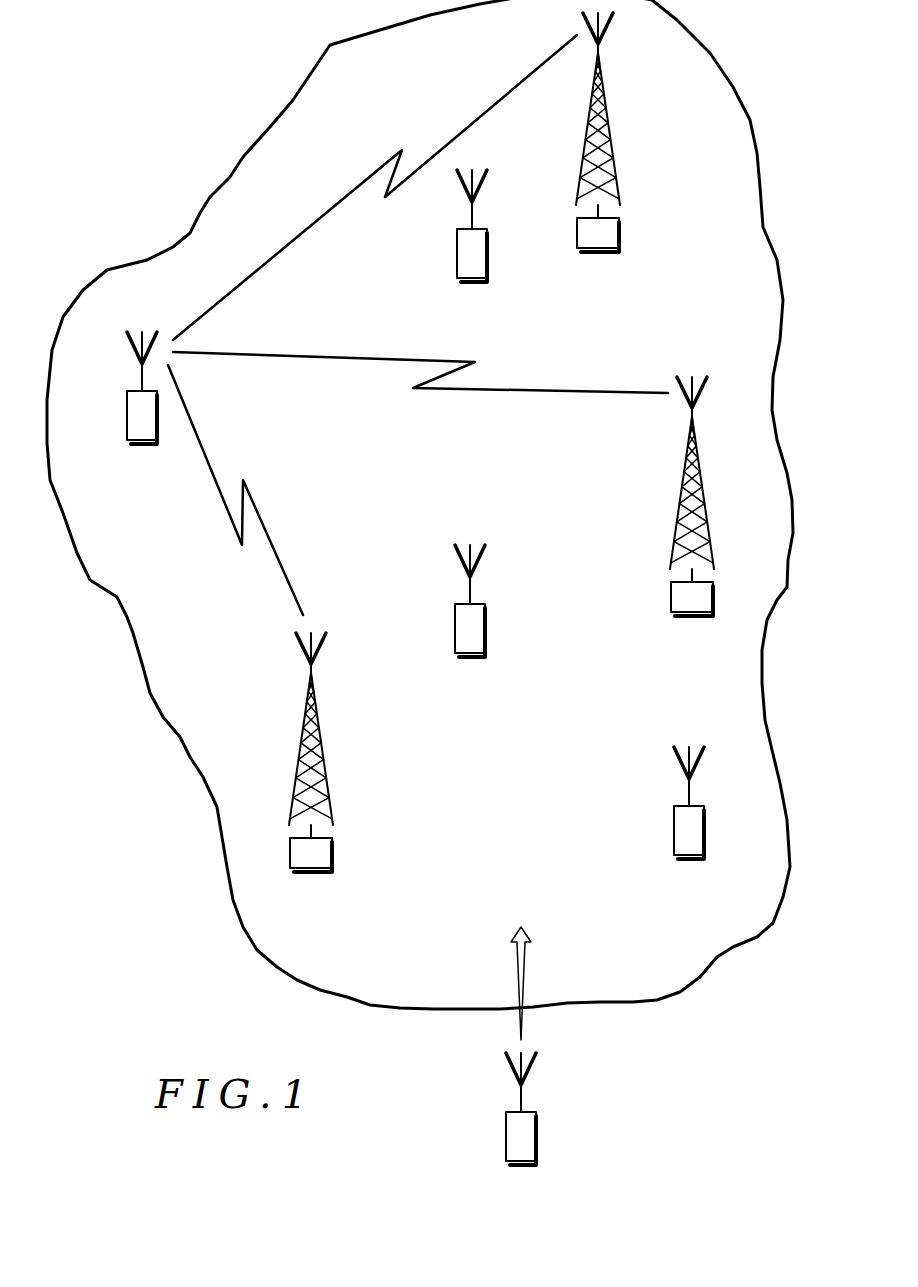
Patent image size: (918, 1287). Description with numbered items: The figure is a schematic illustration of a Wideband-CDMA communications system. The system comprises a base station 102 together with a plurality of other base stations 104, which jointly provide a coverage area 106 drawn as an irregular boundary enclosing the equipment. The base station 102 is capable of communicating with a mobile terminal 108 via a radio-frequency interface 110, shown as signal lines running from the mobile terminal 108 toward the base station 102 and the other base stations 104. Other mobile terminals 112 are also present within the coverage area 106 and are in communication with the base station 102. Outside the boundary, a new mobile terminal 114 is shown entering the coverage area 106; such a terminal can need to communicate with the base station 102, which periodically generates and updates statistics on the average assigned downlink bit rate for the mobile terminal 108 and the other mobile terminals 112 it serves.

The base station 102 is at (358, 840).
The other base stations 104 is at (636, 211).
The coverage area 106 is at (147, 697).
The mobile terminal 108 is at (140, 440).
The radio-frequency interface 110 is at (362, 185).
The other mobile terminals 112 is at (456, 246).
The new mobile terminal 114 is at (507, 1125).